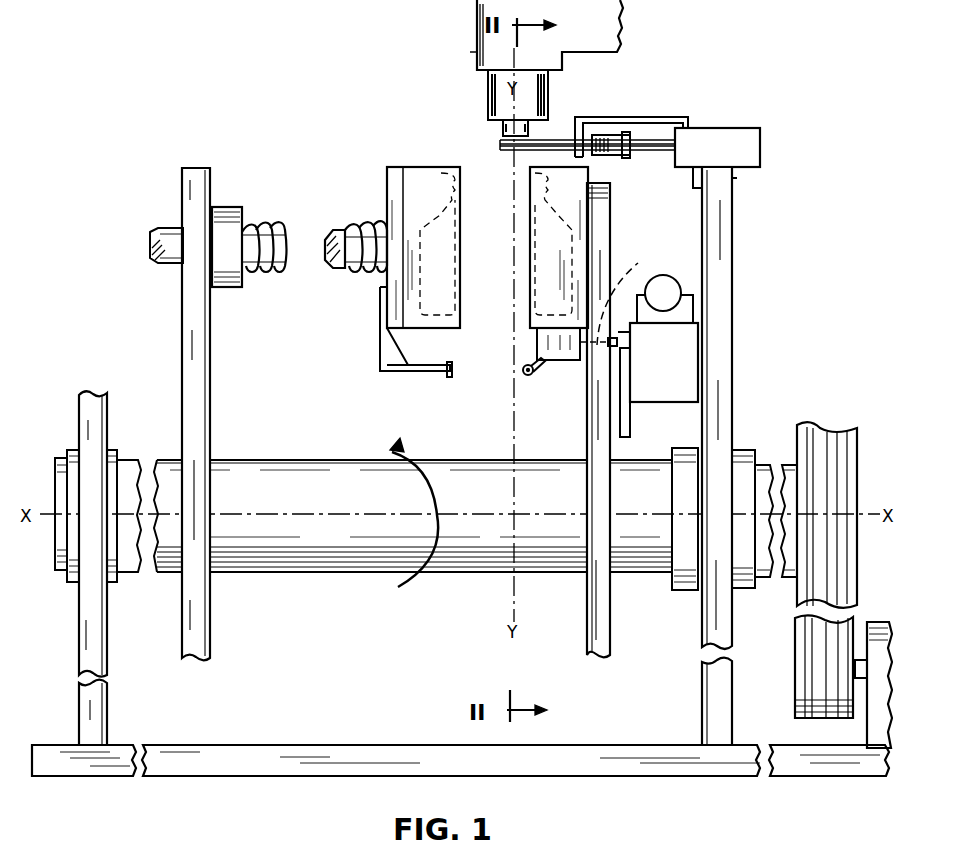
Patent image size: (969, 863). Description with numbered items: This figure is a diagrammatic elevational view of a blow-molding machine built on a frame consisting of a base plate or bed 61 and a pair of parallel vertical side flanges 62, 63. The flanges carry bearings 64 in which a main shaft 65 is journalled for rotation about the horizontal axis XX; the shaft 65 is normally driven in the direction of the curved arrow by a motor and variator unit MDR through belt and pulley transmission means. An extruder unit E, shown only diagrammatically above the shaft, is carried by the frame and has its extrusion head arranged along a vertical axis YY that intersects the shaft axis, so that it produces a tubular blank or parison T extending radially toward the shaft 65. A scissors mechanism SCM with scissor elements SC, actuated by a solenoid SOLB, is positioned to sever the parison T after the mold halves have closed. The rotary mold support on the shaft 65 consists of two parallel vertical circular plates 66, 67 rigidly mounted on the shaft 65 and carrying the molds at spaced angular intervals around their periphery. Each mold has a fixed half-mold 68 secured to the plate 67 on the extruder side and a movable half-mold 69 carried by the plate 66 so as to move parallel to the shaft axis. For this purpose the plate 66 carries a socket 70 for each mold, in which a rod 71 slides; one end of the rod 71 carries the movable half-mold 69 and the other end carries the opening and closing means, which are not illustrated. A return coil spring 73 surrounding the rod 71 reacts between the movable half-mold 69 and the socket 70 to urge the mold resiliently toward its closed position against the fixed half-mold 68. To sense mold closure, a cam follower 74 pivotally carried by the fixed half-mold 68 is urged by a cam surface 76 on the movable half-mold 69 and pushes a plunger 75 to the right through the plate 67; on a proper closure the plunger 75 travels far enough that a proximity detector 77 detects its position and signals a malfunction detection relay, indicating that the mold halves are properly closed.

The base plate 61 is at (242, 745).
The vertical side flange 62 is at (82, 623).
The vertical side flange 63 is at (715, 622).
The bearings 64 is at (75, 450).
The main shaft 65 is at (330, 465).
The vertical circular plate 66 is at (202, 610).
The vertical circular plate 67 is at (598, 615).
The fixed half-mold 68 is at (528, 230).
The movable half-mold 69 is at (460, 287).
The socket 70 is at (228, 207).
The rod 71 is at (172, 230).
The return coil spring 73 is at (353, 225).
The cam follower 74 is at (535, 377).
The plunger 75 is at (614, 295).
The cam surface 76 is at (452, 375).
The proximity detector 77 is at (695, 360).
The extruder unit E is at (477, 13).
The tubular parison T is at (502, 128).
The scissor elements SC is at (500, 143).
The scissors mechanism SCM is at (643, 107).
The solenoid SOLB is at (717, 158).
The motor and variator unit MDR is at (873, 727).